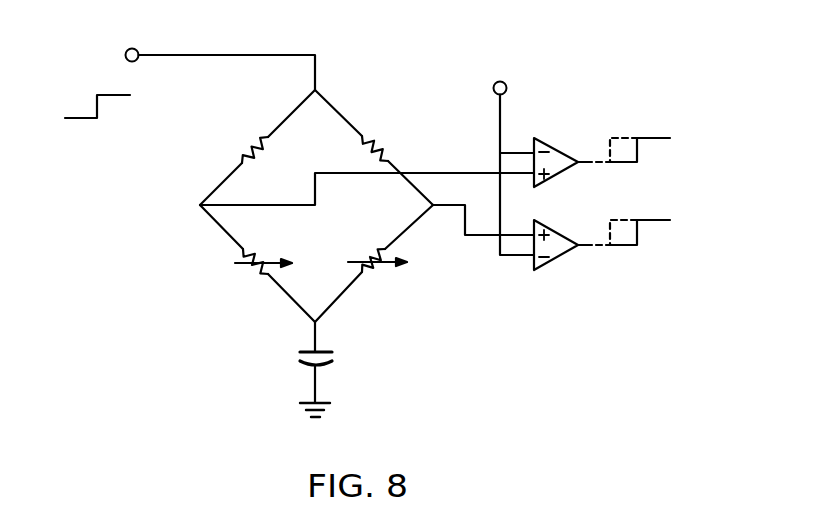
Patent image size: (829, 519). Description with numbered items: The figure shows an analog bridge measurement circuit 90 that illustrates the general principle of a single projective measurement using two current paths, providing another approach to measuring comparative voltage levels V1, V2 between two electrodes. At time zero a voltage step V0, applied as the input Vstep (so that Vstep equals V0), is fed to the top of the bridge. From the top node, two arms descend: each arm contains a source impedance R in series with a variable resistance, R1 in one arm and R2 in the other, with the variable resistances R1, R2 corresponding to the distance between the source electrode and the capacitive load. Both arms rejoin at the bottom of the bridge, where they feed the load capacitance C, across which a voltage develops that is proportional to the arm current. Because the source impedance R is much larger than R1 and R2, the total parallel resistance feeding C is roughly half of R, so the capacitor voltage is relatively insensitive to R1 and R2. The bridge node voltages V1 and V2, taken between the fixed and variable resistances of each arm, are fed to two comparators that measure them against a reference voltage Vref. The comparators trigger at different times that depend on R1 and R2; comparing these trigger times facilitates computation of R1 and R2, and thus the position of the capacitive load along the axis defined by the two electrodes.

The analog bridge measurement circuit 90 is at (190, 267).
The source impedance R is at (316, 147).
The variable resistance R1 is at (257, 263).
The variable resistance R2 is at (374, 263).
The load capacitance C is at (330, 369).
The comparative voltage level V1 is at (349, 197).
The comparative voltage level V2 is at (483, 223).
The reference voltage Vref is at (509, 154).
The voltage step input Vstep is at (194, 66).
The voltage step V0 is at (89, 117).